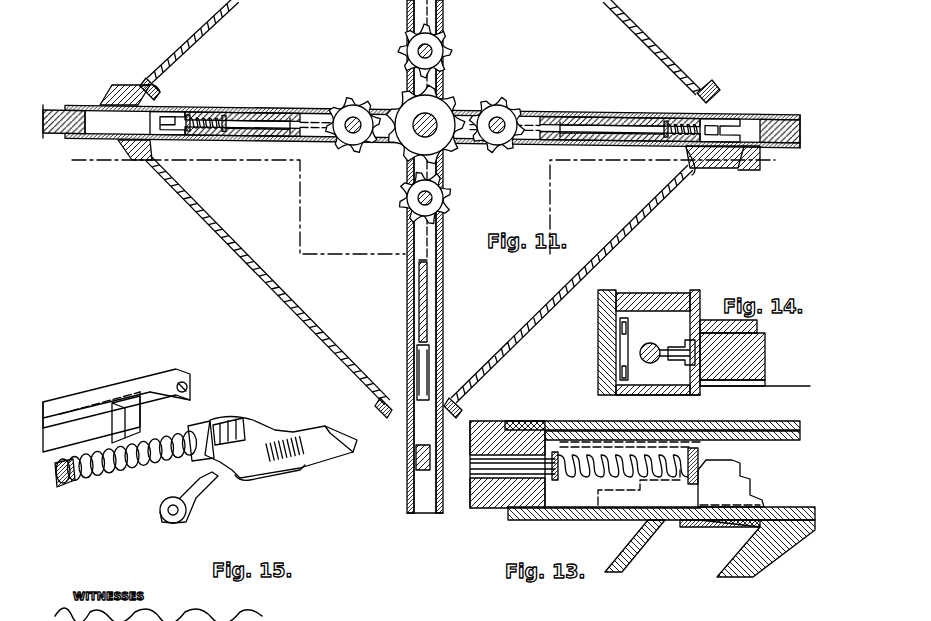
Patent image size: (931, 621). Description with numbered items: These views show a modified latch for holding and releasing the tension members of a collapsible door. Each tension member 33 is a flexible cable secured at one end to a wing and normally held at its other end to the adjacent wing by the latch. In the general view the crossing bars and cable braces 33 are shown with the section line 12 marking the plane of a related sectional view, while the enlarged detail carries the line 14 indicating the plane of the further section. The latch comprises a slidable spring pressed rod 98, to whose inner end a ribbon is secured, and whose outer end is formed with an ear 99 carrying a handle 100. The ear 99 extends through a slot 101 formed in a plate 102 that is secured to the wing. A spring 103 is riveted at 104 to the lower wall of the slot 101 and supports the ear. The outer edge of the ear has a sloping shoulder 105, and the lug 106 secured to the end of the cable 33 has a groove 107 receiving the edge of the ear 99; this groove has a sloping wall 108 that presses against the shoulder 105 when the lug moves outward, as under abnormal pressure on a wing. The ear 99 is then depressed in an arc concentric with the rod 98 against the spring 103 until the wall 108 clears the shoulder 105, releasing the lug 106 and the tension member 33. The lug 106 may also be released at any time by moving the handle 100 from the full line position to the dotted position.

In FIG. 11, the section line of FIG. 12 is at (782, 174).
In FIG. 13, the section line of FIG. 14 is at (684, 422).
In FIG. 11, the tension member 33 is at (258, 260).
In FIG. 11, the slidable spring pressed rod 98 is at (627, 122).
In FIG. 14, the slidable spring pressed rod 98 is at (598, 360).
In FIG. 13, the slidable spring pressed rod 98 is at (505, 465).
In FIG. 15, the slidable spring pressed rod 98 is at (65, 488).
In FIG. 14, the ear 99 is at (688, 362).
In FIG. 13, the ear 99 is at (744, 507).
In FIG. 15, the ear 99 is at (297, 450).
In FIG. 11, the handle 100 is at (700, 146).
In FIG. 13, the handle 100 is at (623, 526).
In FIG. 15, the handle 100 is at (180, 527).
In FIG. 14, the slot 101 is at (687, 368).
In FIG. 11, the plate 102 is at (760, 150).
In FIG. 14, the plate 102 is at (702, 389).
In FIG. 13, the plate 102 is at (527, 512).
In FIG. 14, the spring 103 is at (722, 378).
In FIG. 14, the rivet 104 is at (735, 386).
In FIG. 14, the sloping shoulder 105 is at (765, 362).
In FIG. 15, the sloping shoulder 105 is at (282, 470).
In FIG. 11, the lug 106 is at (710, 165).
In FIG. 14, the lug 106 is at (708, 334).
In FIG. 14, the groove 107 is at (755, 328).
In FIG. 14, the sloping wall 108 is at (698, 300).